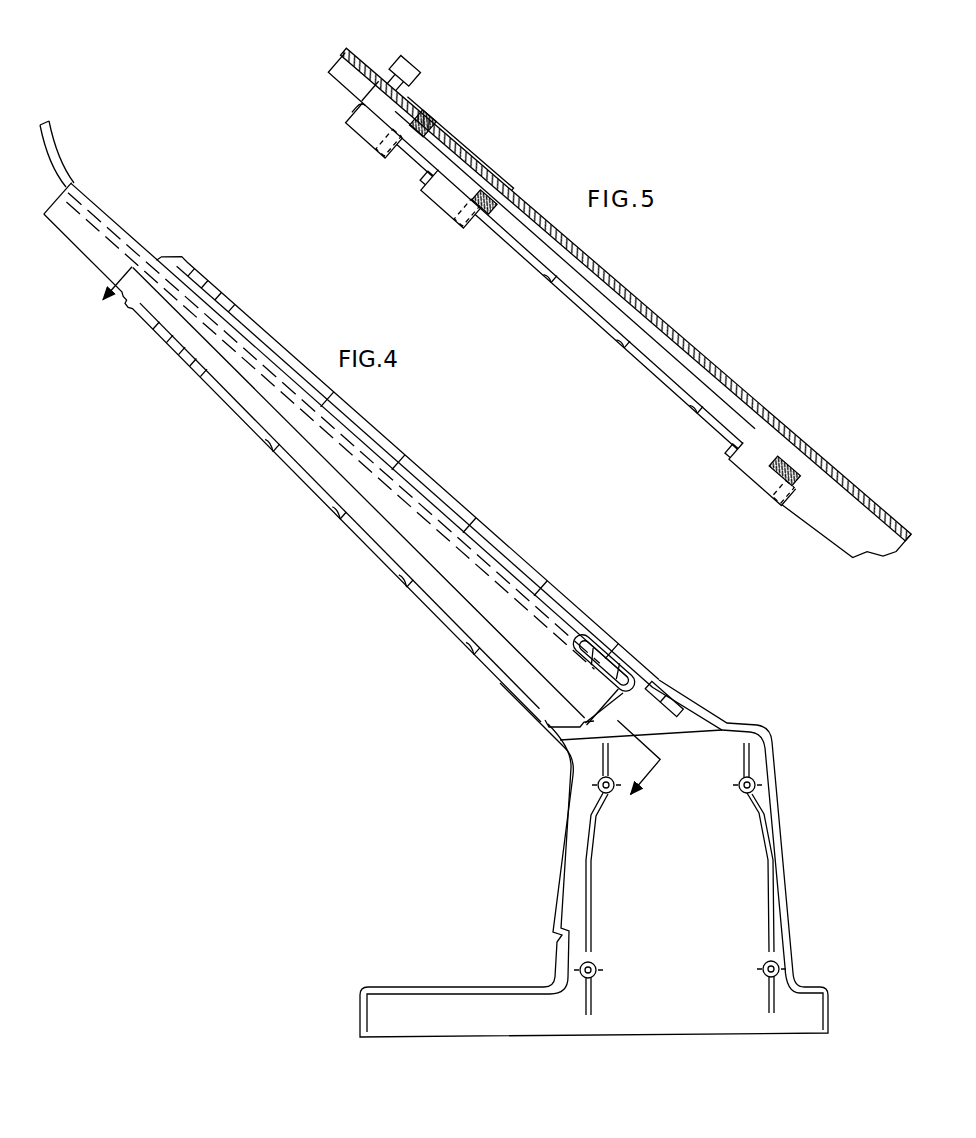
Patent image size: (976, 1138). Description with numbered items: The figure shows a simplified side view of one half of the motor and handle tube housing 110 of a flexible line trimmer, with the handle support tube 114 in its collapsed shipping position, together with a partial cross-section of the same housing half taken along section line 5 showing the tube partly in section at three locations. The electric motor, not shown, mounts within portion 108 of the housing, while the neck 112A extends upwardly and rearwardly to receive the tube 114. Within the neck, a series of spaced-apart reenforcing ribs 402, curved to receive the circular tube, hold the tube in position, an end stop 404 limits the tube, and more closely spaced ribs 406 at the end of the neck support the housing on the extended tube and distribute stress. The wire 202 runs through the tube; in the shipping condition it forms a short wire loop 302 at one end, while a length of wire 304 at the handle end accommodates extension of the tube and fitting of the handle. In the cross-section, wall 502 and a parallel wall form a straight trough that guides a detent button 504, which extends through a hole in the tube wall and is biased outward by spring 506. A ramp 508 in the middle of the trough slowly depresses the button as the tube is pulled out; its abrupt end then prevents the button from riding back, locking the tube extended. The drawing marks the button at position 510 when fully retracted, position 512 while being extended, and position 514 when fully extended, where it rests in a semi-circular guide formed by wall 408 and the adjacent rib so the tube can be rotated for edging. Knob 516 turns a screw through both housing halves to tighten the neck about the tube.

In FIG. 4, the section line 5— 5 is at (380, 535).
In FIG. 4, the portion of housing 108 is at (789, 880).
In FIG. 4, the motor and handle tube housing 110 is at (490, 763).
In FIG. 4, the neck of housing half 112A is at (470, 498).
In FIG. 5, the neck of housing half 112A is at (716, 352).
In FIG. 4, the handle support tube 114 is at (243, 391).
In FIG. 5, the handle support tube 114 is at (355, 143).
In FIG. 4, the wire 202 is at (398, 463).
In FIG. 4, the wire loop 302 is at (585, 618).
In FIG. 4, the length of wire 304 is at (56, 146).
In FIG. 4, the reenforcing ribs 402 is at (348, 519).
In FIG. 5, the reenforcing ribs 402 is at (688, 399).
In FIG. 4, the end stop 404 is at (548, 720).
In FIG. 5, the end stop 404 is at (812, 489).
In FIG. 4, the ribs 406 is at (250, 308).
In FIG. 4, the wall 408 is at (200, 371).
In FIG. 5, the wall 408 is at (438, 127).
In FIG. 5, the wall 502 is at (652, 330).
In FIG. 5, the detent button 504 is at (424, 128).
In FIG. 5, the spring 506 is at (397, 159).
In FIG. 5, the ramp 508 is at (488, 168).
In FIG. 5, the position of detent button 510 is at (740, 496).
In FIG. 5, the position of detent button 512 is at (450, 235).
In FIG. 5, the position of detent button 514 is at (368, 161).
In FIG. 5, the knob 516 is at (404, 62).